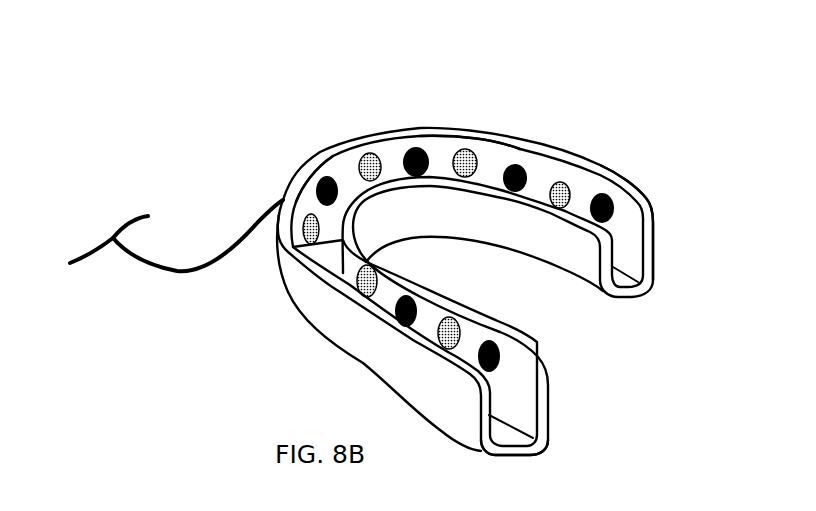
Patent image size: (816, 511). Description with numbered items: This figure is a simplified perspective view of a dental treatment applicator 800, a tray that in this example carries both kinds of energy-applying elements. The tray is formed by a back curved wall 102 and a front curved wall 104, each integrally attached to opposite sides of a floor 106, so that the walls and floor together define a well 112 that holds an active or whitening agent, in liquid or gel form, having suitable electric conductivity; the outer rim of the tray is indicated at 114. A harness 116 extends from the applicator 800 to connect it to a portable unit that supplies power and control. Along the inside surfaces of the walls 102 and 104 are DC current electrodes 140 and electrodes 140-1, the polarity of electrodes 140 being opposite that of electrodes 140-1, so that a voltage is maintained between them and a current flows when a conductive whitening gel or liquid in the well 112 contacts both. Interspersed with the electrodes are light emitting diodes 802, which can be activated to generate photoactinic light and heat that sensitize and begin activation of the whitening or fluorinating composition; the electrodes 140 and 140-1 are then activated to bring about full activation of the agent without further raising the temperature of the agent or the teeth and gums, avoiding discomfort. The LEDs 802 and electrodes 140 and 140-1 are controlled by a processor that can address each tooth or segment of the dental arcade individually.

The dental treatment applicator 800 is at (481, 107).
The back curved wall 102 is at (390, 298).
The front curved wall 104 is at (307, 193).
The floor 106 is at (503, 433).
The well 112 is at (444, 158).
The outer wall 114 is at (645, 203).
The harness 116 is at (243, 230).
The DC current electrodes 140 is at (492, 281).
The electrodes 140-1 is at (470, 162).
The light emitting diodes 802 is at (417, 148).